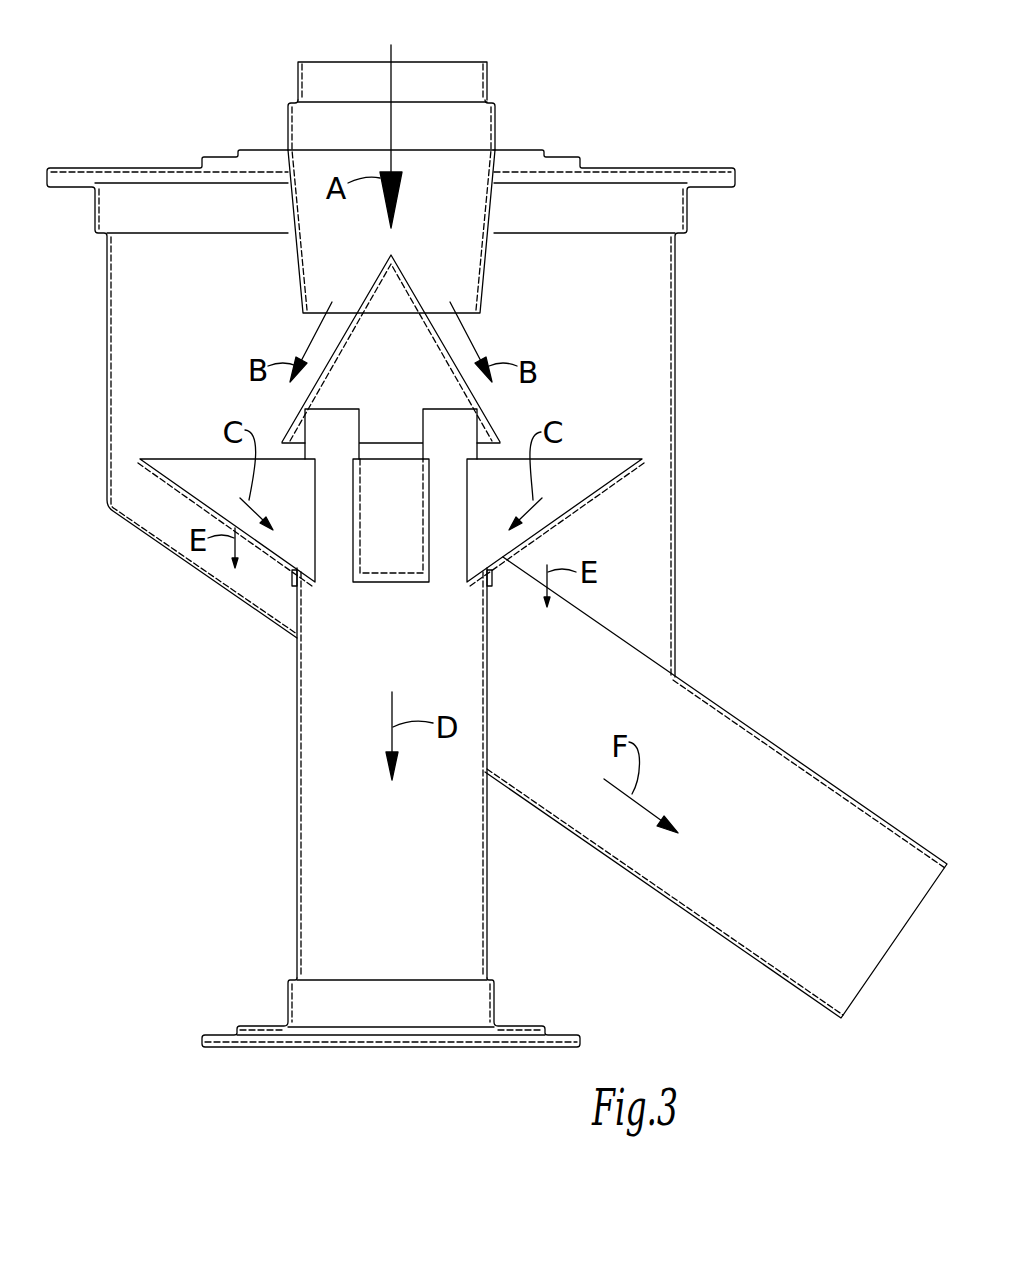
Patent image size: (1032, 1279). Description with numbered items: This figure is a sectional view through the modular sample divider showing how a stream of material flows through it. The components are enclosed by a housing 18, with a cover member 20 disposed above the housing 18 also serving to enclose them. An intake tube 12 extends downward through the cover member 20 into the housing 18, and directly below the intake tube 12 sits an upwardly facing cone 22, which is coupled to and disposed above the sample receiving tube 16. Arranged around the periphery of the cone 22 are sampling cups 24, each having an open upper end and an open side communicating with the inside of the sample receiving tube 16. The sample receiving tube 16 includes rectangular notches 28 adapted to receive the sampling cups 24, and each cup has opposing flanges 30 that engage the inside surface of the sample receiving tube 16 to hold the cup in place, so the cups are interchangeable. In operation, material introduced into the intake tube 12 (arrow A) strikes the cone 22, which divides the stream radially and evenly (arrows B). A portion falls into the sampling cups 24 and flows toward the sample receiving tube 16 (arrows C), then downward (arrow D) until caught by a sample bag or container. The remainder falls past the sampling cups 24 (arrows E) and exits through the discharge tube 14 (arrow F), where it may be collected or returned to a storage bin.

The intake tube 12 is at (483, 78).
The discharge tube 14 is at (772, 742).
The sample receiving tube 16 is at (270, 920).
The housing 18 is at (89, 320).
The cover member 20 is at (484, 272).
The cone 22 is at (438, 334).
The sampling cups 24 is at (188, 458).
The rectangular notches 28 is at (364, 418).
The opposing flanges 30 is at (353, 490).